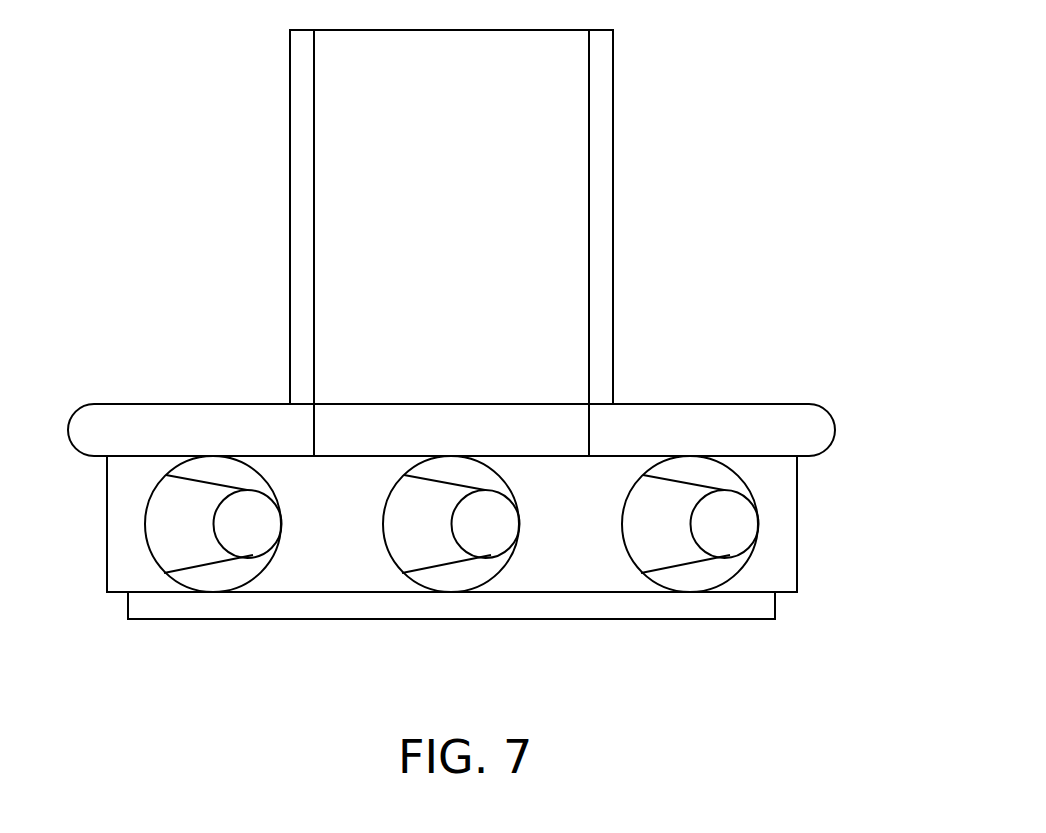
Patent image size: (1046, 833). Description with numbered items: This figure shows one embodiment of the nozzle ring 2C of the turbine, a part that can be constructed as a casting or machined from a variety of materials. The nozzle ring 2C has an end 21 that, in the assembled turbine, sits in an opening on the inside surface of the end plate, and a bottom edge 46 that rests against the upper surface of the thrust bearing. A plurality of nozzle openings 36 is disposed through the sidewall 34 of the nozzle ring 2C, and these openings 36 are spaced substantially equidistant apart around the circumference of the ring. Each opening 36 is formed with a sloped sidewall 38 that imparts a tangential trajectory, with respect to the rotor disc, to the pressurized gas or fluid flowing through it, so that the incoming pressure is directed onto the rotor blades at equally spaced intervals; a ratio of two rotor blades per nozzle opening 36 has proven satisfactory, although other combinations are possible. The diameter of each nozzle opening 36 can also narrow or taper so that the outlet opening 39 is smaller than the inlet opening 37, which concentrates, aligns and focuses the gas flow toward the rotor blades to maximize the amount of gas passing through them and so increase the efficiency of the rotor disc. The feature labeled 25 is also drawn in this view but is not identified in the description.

The end 21 is at (613, 52).
The column interior channel 25 is at (522, 296).
The nozzle ring 2C is at (709, 380).
The sidewall 34 is at (777, 493).
The nozzle openings 36 is at (717, 532).
The inlet opening 37 is at (152, 558).
The sloped sidewall 38 is at (423, 497).
The outlet opening 39 is at (222, 545).
The bottom edge 46 is at (152, 634).